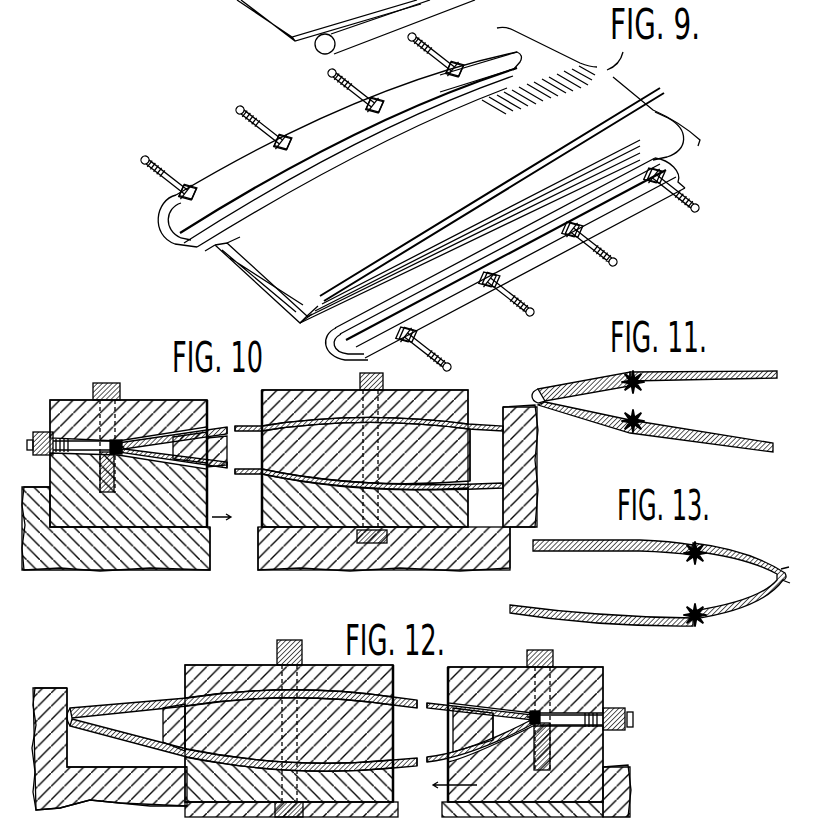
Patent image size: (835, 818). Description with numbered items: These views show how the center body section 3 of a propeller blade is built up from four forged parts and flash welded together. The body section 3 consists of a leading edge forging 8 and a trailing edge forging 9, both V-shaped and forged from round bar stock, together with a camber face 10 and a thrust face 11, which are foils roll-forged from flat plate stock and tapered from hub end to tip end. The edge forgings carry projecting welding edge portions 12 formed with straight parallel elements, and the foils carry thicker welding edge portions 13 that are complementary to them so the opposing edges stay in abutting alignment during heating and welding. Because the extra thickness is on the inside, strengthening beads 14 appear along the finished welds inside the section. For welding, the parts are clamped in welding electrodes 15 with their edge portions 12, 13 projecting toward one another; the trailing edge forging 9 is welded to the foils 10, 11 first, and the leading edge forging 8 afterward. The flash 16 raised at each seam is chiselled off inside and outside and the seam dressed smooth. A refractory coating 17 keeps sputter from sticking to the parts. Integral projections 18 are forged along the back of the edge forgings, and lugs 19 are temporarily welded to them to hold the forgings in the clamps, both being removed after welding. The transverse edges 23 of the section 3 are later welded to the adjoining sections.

In FIG. 9, the body section 3 is at (657, 162).
In FIG. 9, the leading edge forging 8 is at (530, 245).
In FIG. 13, the leading edge forging 8 is at (740, 553).
In FIG. 12, the leading edge forging 8 is at (530, 713).
In FIG. 9, the trailing edge forging 9 is at (326, 125).
In FIG. 10, the trailing edge forging 9 is at (160, 433).
In FIG. 11, the trailing edge forging 9 is at (583, 383).
In FIG. 12, the trailing edge forging 9 is at (117, 703).
In FIG. 9, the camber face 10 is at (237, 281).
In FIG. 10, the camber face 10 is at (293, 473).
In FIG. 11, the camber face 10 is at (723, 450).
In FIG. 13, the camber face 10 is at (637, 623).
In FIG. 9, the thrust face 11 is at (265, 283).
In FIG. 10, the thrust face 11 is at (303, 425).
In FIG. 11, the thrust face 11 is at (737, 365).
In FIG. 13, the thrust face 11 is at (587, 540).
In FIG. 9, the welding edge portions 12 is at (180, 243).
In FIG. 10, the welding edge portions 12 is at (217, 423).
In FIG. 12, the welding edge portions 12 is at (427, 698).
In FIG. 9, the welding edge portions 13 is at (222, 258).
In FIG. 10, the welding edge portions 13 is at (233, 430).
In FIG. 12, the welding edge portions 13 is at (412, 695).
In FIG. 12, the strengthening beads 14 is at (168, 737).
In FIG. 10, the welding electrodes 15 is at (137, 507).
In FIG. 12, the welding electrodes 15 is at (200, 770).
In FIG. 11, the flash 16 is at (627, 430).
In FIG. 13, the flash 16 is at (688, 603).
In FIG. 10, the coating 17 is at (254, 450).
In FIG. 12, the coating 17 is at (447, 727).
In FIG. 9, the integral projections 18 is at (190, 188).
In FIG. 10, the integral projections 18 is at (118, 440).
In FIG. 13, the integral projections 18 is at (780, 583).
In FIG. 12, the integral projections 18 is at (533, 710).
In FIG. 9, the lugs 19 is at (157, 160).
In FIG. 10, the lugs 19 is at (60, 438).
In FIG. 12, the lugs 19 is at (600, 710).
In FIG. 9, the edges 23 is at (656, 97).